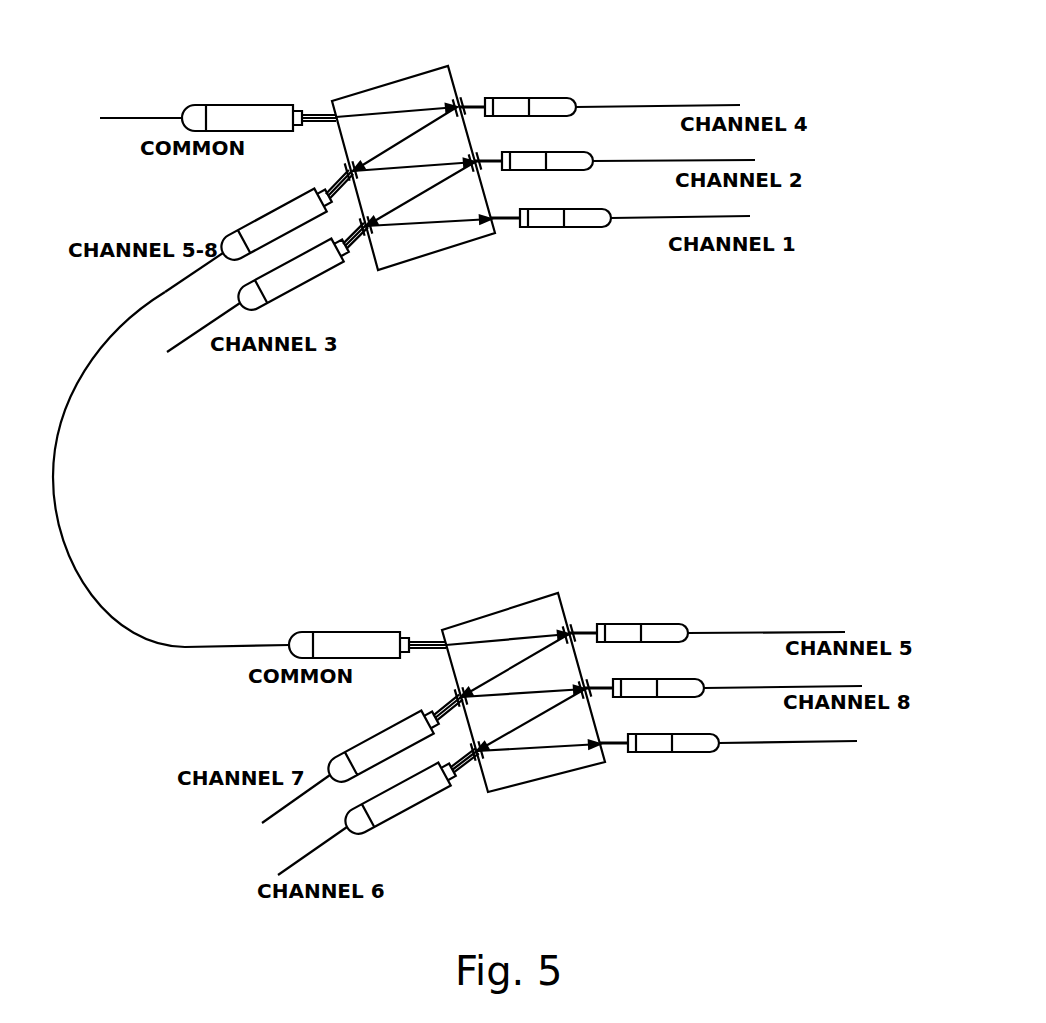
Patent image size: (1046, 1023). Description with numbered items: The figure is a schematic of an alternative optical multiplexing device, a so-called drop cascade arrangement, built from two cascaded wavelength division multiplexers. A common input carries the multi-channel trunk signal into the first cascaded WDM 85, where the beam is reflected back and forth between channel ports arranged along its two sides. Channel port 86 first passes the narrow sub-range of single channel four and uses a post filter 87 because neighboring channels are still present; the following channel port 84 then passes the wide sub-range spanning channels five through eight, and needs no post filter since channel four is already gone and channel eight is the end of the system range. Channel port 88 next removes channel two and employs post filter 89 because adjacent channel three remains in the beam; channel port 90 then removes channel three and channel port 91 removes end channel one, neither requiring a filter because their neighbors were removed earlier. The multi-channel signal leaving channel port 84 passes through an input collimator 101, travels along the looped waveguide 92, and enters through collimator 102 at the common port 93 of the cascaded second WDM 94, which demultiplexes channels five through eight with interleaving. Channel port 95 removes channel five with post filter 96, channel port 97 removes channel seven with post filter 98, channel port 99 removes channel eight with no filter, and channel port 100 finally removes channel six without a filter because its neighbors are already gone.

The channel port 84 is at (353, 168).
The first cascaded WDM 85 is at (372, 50).
The channel port 86 is at (450, 105).
The post filter 87 is at (467, 93).
The channel port 88 is at (473, 159).
The post filter 89 is at (486, 172).
The channel port 90 is at (368, 222).
The channel port 91 is at (486, 216).
The waveguide 92 is at (75, 556).
The common port 93 is at (440, 650).
The second WDM 94 is at (488, 588).
The channel port 95 is at (560, 631).
The post filter 96 is at (577, 622).
The channel port 97 is at (464, 694).
The post filter 98 is at (450, 693).
The channel port 99 is at (580, 686).
The channel port 100 is at (480, 748).
The channel 5-8 input collimator 101 is at (252, 232).
The common input collimator of second block 102 is at (362, 630).